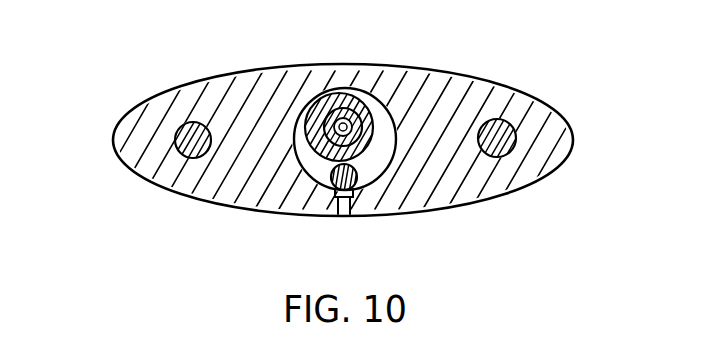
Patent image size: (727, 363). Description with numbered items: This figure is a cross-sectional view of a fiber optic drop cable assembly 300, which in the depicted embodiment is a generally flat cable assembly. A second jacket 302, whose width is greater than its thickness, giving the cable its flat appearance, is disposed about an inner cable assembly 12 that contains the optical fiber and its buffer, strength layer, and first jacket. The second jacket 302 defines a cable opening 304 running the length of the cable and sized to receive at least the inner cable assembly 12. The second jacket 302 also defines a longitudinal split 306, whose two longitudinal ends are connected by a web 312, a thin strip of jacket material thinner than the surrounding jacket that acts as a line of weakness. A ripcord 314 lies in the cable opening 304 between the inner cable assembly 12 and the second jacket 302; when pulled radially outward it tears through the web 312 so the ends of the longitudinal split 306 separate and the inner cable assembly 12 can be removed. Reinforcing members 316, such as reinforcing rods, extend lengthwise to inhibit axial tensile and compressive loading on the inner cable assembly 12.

The fiber optic drop cable assembly 300 is at (148, 54).
The second jacket 302 is at (567, 117).
The cable opening 304 is at (387, 154).
The inner cable assembly 12 is at (386, 118).
The web 312 is at (341, 202).
The ripcord 314 is at (330, 183).
The longitudinal split 306 is at (327, 225).
The reinforcing members 316 is at (186, 157).